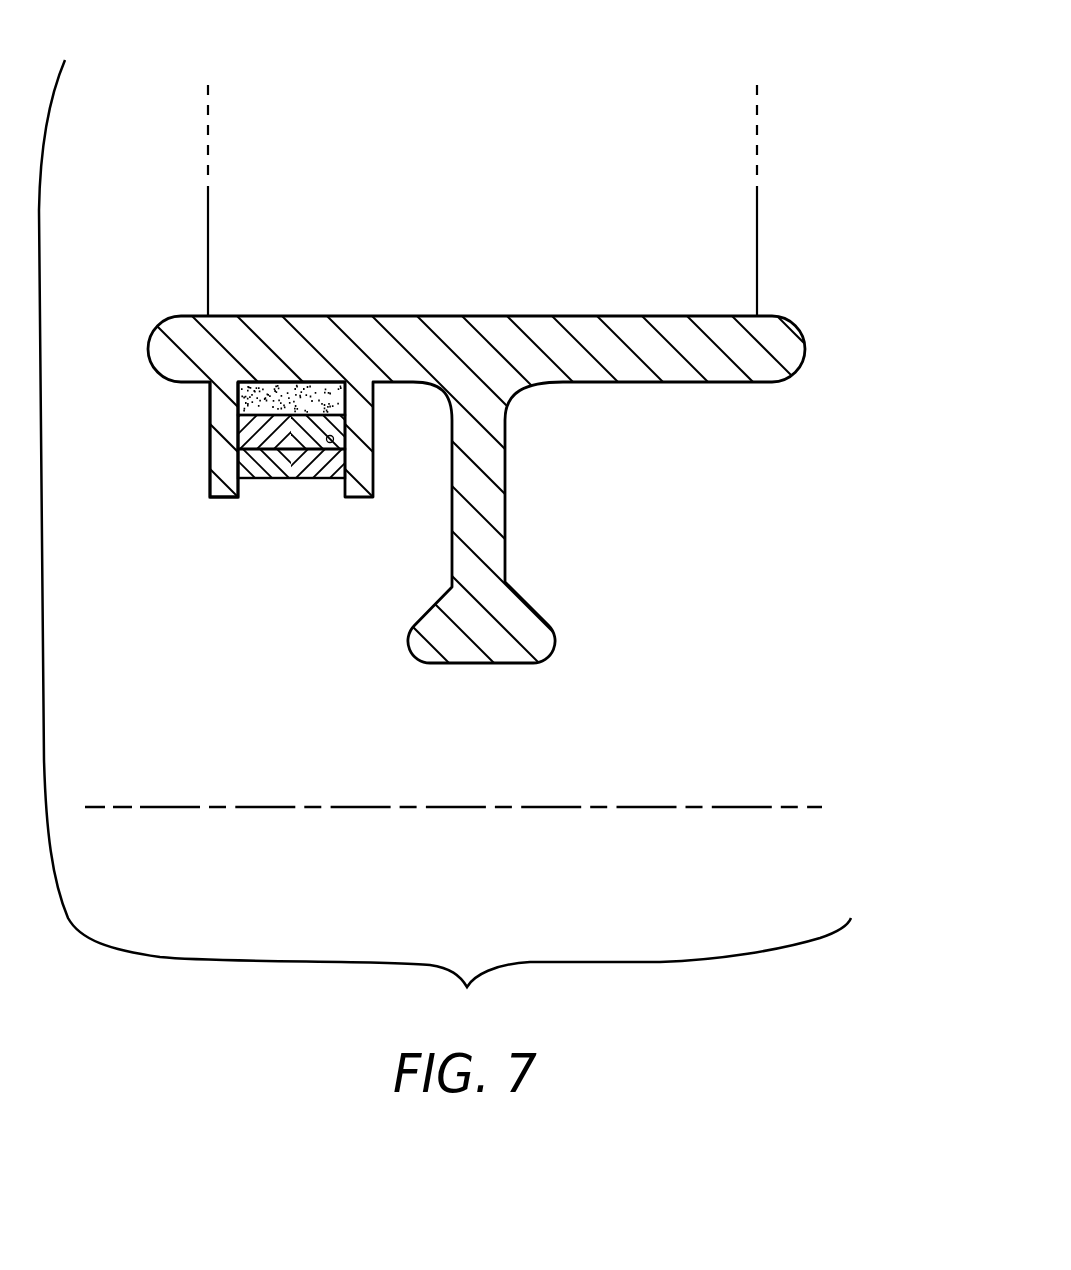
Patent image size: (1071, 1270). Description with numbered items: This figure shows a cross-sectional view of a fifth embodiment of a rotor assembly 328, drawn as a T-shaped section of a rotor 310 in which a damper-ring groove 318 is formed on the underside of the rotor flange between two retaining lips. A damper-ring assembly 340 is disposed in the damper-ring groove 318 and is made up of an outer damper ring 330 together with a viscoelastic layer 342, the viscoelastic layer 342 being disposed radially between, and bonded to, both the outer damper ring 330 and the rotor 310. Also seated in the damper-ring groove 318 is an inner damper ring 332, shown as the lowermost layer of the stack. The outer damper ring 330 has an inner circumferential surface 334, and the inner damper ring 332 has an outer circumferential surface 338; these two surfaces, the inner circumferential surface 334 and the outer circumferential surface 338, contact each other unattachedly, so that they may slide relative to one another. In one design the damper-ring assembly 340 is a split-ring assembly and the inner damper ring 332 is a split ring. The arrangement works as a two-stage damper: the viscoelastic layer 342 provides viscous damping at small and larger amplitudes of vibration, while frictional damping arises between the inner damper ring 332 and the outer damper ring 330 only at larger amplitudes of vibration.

The rotor 310 is at (768, 314).
The damper-ring groove 318 is at (258, 390).
The rotor assembly 328 is at (778, 130).
The outer damper ring 330 is at (333, 441).
The inner damper ring 332 is at (265, 465).
The inner circumferential surface 334 is at (291, 452).
The outer circumferential surface 338 is at (336, 452).
The damper-ring assembly 340 is at (235, 432).
The viscoelastic layer 342 is at (336, 393).